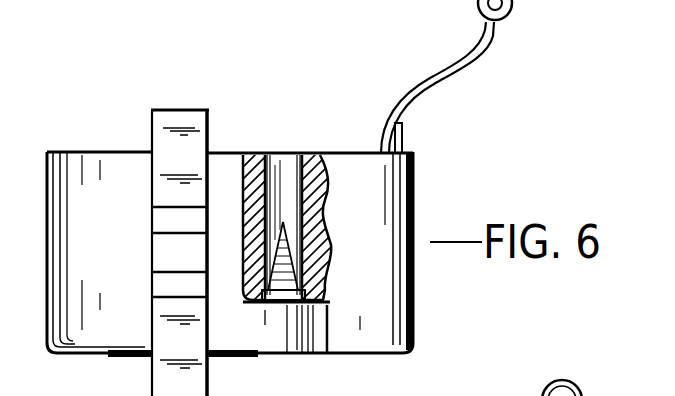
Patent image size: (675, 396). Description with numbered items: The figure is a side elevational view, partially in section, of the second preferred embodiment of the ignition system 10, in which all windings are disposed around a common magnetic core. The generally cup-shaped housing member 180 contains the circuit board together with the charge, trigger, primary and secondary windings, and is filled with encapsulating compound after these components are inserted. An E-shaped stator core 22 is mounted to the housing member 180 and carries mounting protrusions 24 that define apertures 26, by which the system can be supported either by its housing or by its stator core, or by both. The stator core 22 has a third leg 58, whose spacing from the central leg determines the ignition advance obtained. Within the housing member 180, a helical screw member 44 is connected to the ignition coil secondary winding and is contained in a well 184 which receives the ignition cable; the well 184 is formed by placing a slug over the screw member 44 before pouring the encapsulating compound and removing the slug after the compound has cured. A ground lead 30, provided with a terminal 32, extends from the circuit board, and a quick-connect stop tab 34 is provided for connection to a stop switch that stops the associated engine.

The housing assembly 10 is at (131, 124).
The E-shaped stator core 22 is at (185, 92).
The mounting protrusions 24 is at (160, 222).
The apertures 26 is at (165, 237).
The ground lead 30 is at (483, 62).
The terminal 32 is at (512, 12).
The terminal post 34 is at (404, 133).
The helical screw member 44 is at (286, 200).
The third leg 58 is at (200, 376).
The housing member 180 is at (413, 197).
The well 184 is at (277, 165).